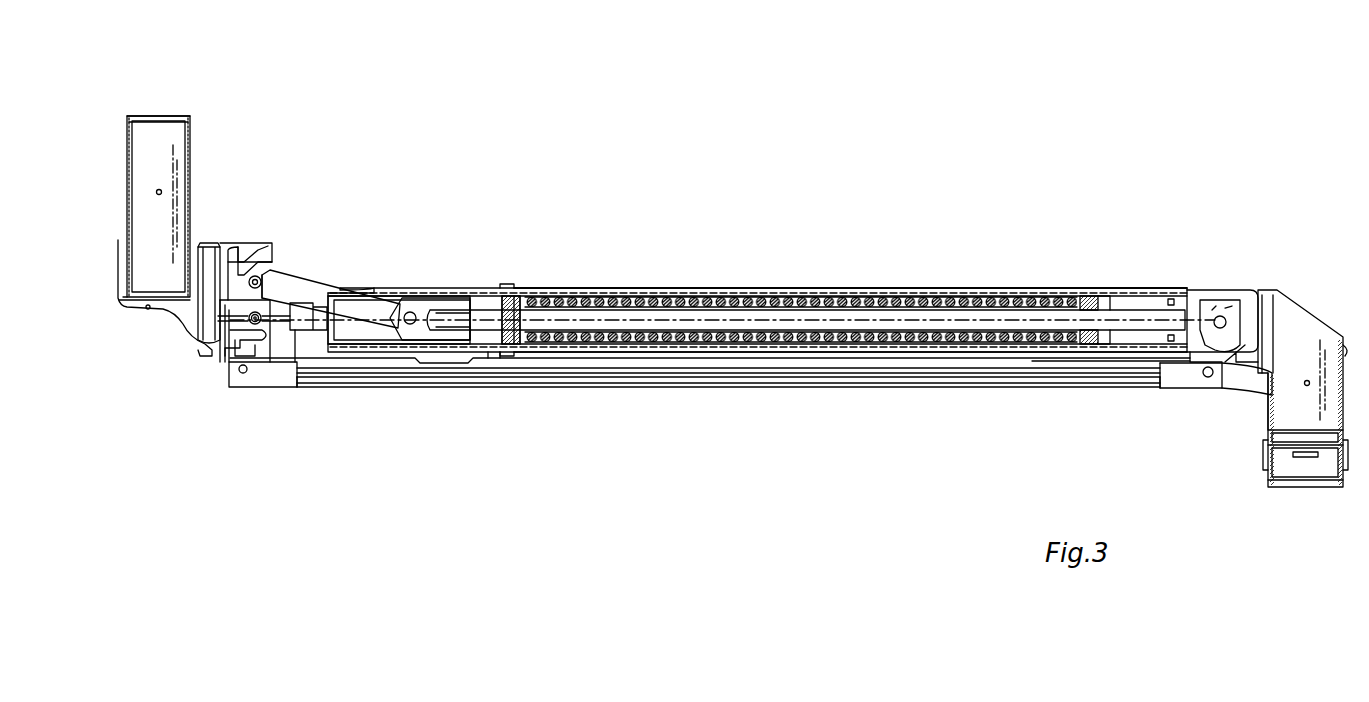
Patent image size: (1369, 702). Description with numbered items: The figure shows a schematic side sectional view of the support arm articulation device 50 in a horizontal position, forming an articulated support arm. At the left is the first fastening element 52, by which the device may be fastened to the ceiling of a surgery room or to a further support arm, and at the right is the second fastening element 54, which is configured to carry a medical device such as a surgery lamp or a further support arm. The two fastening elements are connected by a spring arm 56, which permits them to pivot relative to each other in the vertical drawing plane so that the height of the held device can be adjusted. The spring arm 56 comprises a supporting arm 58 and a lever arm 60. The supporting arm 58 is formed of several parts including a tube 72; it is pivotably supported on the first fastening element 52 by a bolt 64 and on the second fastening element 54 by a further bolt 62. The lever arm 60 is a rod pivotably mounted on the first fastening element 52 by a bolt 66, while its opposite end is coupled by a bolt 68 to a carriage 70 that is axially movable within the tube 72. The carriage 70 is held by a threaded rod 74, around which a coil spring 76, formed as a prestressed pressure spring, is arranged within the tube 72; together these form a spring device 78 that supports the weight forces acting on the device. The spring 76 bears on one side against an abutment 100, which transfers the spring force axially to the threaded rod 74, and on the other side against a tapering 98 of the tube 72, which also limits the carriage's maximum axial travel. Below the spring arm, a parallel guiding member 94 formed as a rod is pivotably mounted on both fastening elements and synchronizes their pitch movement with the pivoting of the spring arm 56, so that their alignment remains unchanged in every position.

The support arm articulation device 50 is at (972, 132).
The first fastening element 52 is at (190, 160).
The second fastening element 54 is at (1303, 320).
The spring arm 56 is at (754, 262).
The supporting arm 58 is at (446, 366).
The lever arm 60 is at (320, 300).
The bolt 62 is at (1222, 318).
The bolt 64 is at (253, 320).
The bolt 66 is at (258, 280).
The bolt 68 is at (410, 316).
The carriage 70 is at (455, 300).
The tube 72 is at (498, 288).
The threaded rod 74 is at (548, 312).
The coil spring 76 is at (607, 300).
The spring device 78 is at (697, 285).
The parallel guiding member 94 is at (563, 388).
The tapering 98 is at (503, 356).
The abutment 100 is at (1088, 298).